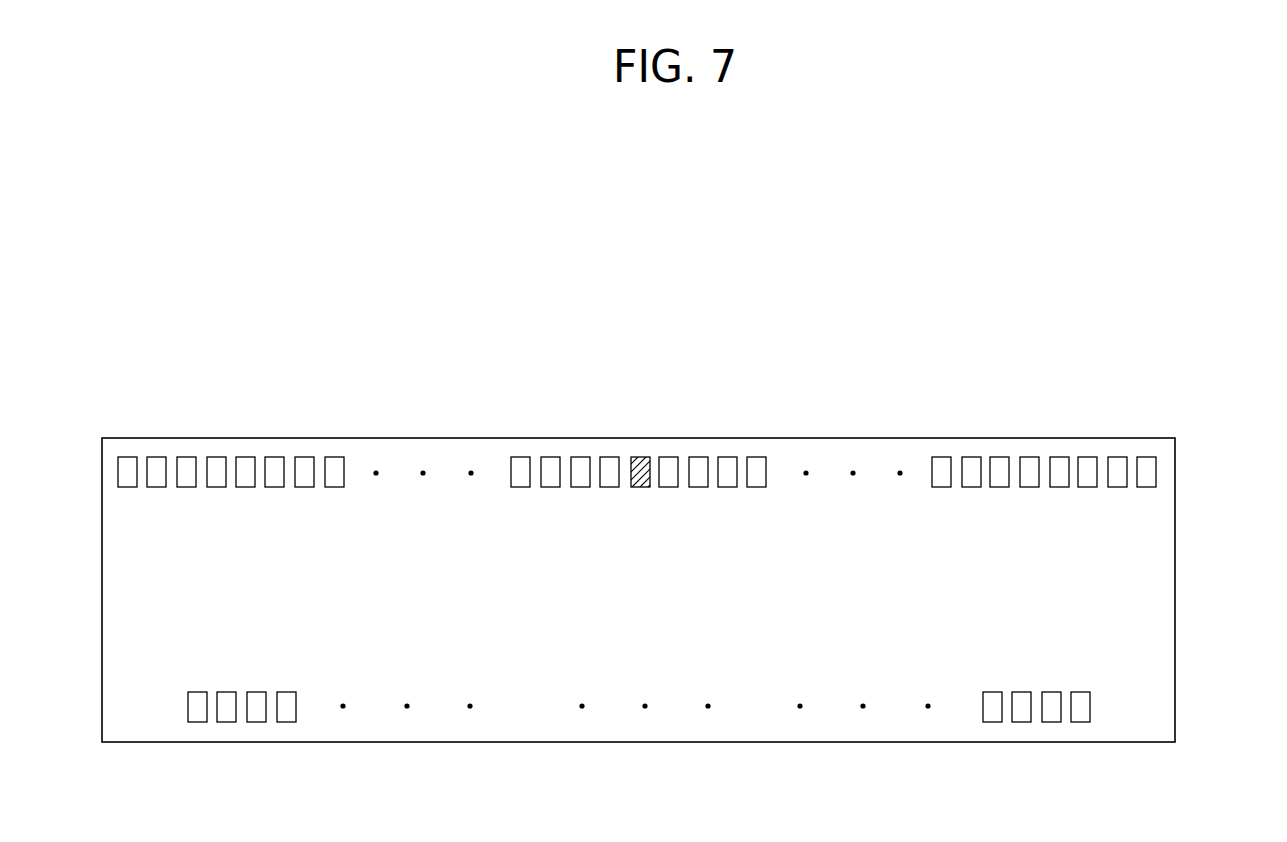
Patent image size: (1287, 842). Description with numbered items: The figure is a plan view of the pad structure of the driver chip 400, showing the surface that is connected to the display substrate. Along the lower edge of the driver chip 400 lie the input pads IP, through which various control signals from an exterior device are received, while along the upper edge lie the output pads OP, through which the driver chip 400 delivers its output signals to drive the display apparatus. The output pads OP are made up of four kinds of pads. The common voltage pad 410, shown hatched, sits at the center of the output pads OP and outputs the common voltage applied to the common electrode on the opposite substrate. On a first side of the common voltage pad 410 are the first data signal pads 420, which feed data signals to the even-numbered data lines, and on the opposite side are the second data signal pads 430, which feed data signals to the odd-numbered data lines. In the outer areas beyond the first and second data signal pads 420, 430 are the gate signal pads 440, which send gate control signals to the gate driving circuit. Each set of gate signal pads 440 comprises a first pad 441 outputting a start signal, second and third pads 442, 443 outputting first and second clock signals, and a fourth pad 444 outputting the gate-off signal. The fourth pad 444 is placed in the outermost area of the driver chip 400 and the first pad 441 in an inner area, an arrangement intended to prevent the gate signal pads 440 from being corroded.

The driver chip 400 is at (1176, 588).
The common voltage pad 410 is at (638, 457).
The first data signal pads 420 is at (237, 431).
The second data signal pads 430 is at (1037, 431).
The gate signal pads 440 is at (636, 401).
The first pad 441 is at (638, 423).
The second pad 442 is at (185, 457).
The third pad 443 is at (157, 457).
The fourth pad 444 is at (125, 457).
The output pads OP is at (1159, 473).
The input pads IP is at (1092, 706).